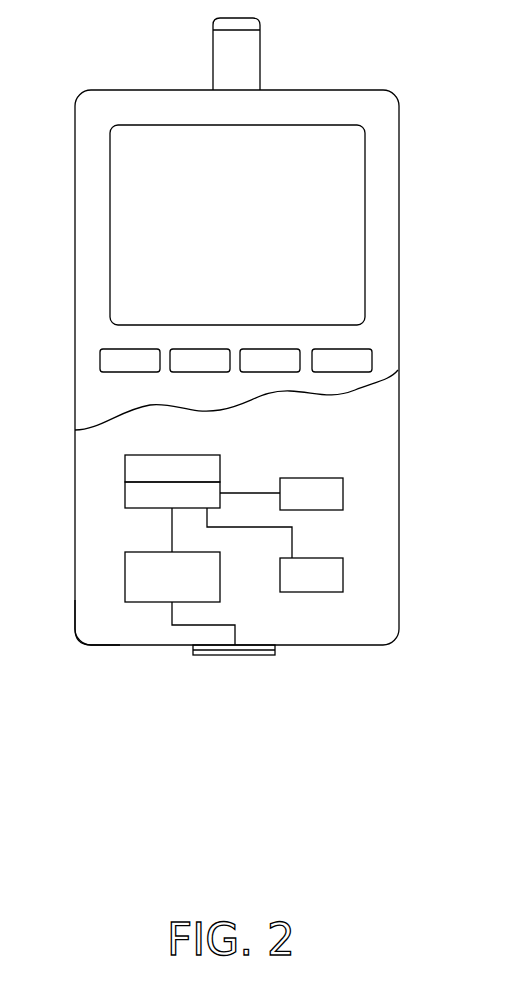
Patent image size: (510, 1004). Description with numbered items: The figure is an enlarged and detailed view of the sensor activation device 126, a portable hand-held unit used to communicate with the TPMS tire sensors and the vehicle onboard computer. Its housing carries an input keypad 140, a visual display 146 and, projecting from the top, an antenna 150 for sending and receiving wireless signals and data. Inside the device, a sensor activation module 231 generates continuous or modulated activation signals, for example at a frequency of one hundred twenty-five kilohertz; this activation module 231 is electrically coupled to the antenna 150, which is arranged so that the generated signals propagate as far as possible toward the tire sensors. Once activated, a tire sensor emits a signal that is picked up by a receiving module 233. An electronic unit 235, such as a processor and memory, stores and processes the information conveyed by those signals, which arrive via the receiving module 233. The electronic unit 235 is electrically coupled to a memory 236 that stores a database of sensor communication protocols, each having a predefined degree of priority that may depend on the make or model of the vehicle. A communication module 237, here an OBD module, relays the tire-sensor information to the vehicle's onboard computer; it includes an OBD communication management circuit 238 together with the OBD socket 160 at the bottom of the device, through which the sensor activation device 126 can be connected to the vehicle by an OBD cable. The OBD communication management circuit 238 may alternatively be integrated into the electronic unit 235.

The sensor activation device 126 is at (372, 60).
The antenna 150 is at (255, 61).
The visual display 146 is at (346, 163).
The input keypad 140 is at (386, 342).
The sensor activation module 231 is at (125, 467).
The electronic unit 235 is at (125, 493).
The receiving module 233 is at (335, 498).
The memory 236 is at (335, 577).
The OBD communication management circuit 238 is at (125, 572).
The communication module 237 is at (105, 616).
The OBD socket 160 is at (268, 655).